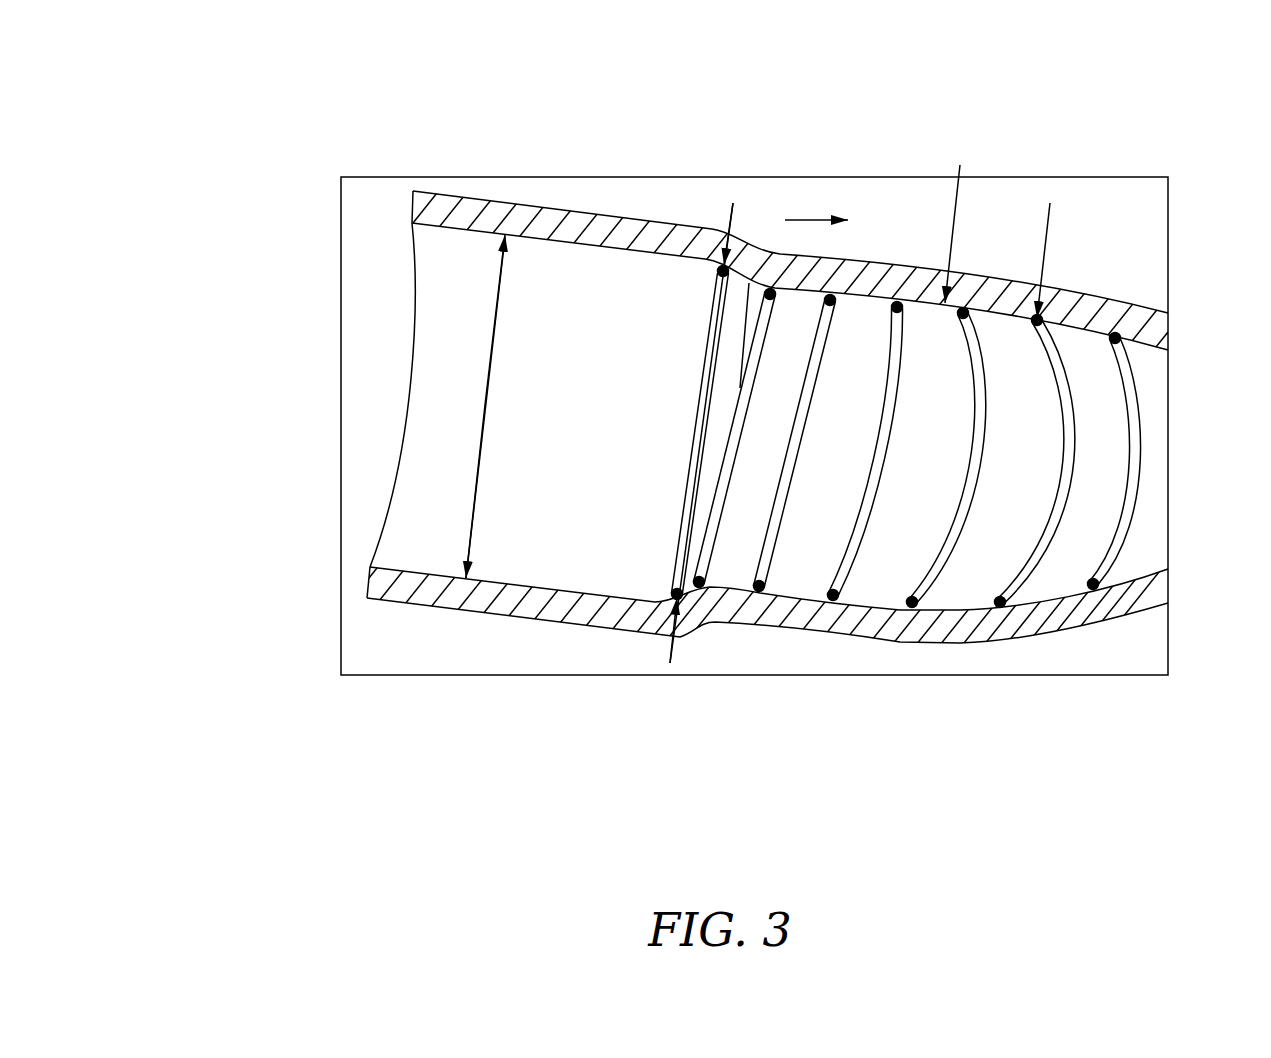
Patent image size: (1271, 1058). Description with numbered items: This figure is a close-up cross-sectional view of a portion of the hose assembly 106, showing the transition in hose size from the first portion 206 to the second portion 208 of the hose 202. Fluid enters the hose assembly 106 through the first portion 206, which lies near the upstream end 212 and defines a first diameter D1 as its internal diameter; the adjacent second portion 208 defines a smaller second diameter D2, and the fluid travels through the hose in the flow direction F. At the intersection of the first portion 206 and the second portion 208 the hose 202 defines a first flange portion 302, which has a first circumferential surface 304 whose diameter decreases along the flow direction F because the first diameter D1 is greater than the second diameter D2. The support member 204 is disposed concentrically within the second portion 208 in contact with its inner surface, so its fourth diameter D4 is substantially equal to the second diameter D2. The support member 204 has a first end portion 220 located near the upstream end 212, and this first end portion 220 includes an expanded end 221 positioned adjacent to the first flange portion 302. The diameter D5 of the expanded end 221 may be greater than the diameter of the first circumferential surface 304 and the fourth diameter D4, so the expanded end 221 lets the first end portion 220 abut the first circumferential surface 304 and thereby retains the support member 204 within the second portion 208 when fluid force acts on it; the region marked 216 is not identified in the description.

The hose assembly 106 is at (1109, 200).
The hose 202 is at (917, 267).
The support member 204 is at (1118, 551).
The first portion 206 is at (426, 604).
The second portion 208 is at (1000, 608).
The upstream end 212 is at (353, 272).
The flow passage 216 is at (370, 451).
The first end portion 220 is at (683, 427).
The expanded end 221 is at (708, 352).
The first flange portion 302 is at (735, 240).
The first circumferential surface 304 is at (703, 583).
The first diameter D1 is at (497, 313).
The second diameter D2 is at (958, 218).
The fourth diameter D4 is at (1044, 258).
The diameter of the expanded end D5 is at (672, 652).
The flow direction F is at (828, 222).